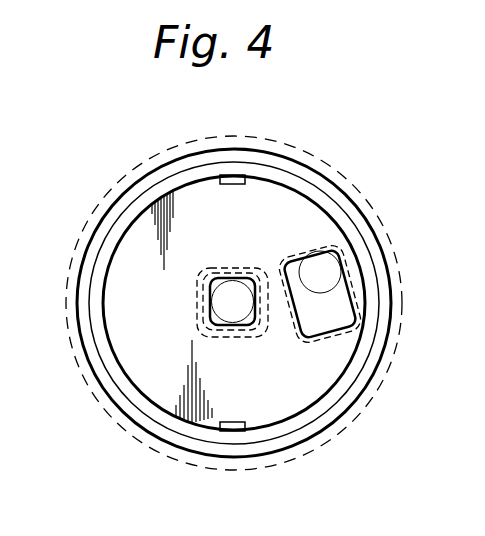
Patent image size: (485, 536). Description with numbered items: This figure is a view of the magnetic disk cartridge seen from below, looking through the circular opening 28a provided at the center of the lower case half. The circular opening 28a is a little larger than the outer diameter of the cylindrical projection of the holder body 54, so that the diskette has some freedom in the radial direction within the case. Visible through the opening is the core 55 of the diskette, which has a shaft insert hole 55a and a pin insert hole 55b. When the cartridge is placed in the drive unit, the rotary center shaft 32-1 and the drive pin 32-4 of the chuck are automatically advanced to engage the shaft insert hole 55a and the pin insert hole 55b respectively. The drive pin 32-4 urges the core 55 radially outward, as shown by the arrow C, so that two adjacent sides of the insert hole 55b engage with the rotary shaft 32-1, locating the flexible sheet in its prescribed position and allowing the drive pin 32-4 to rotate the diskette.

The core 55 is at (127, 243).
The holder body 54 is at (128, 190).
The circular opening 28a is at (154, 169).
The center shaft 32-1 is at (215, 278).
The drive pin 32-4 is at (298, 258).
The shaft insert hole 55a is at (250, 274).
The pin insert hole 55b is at (305, 327).
The arrow C is at (385, 223).